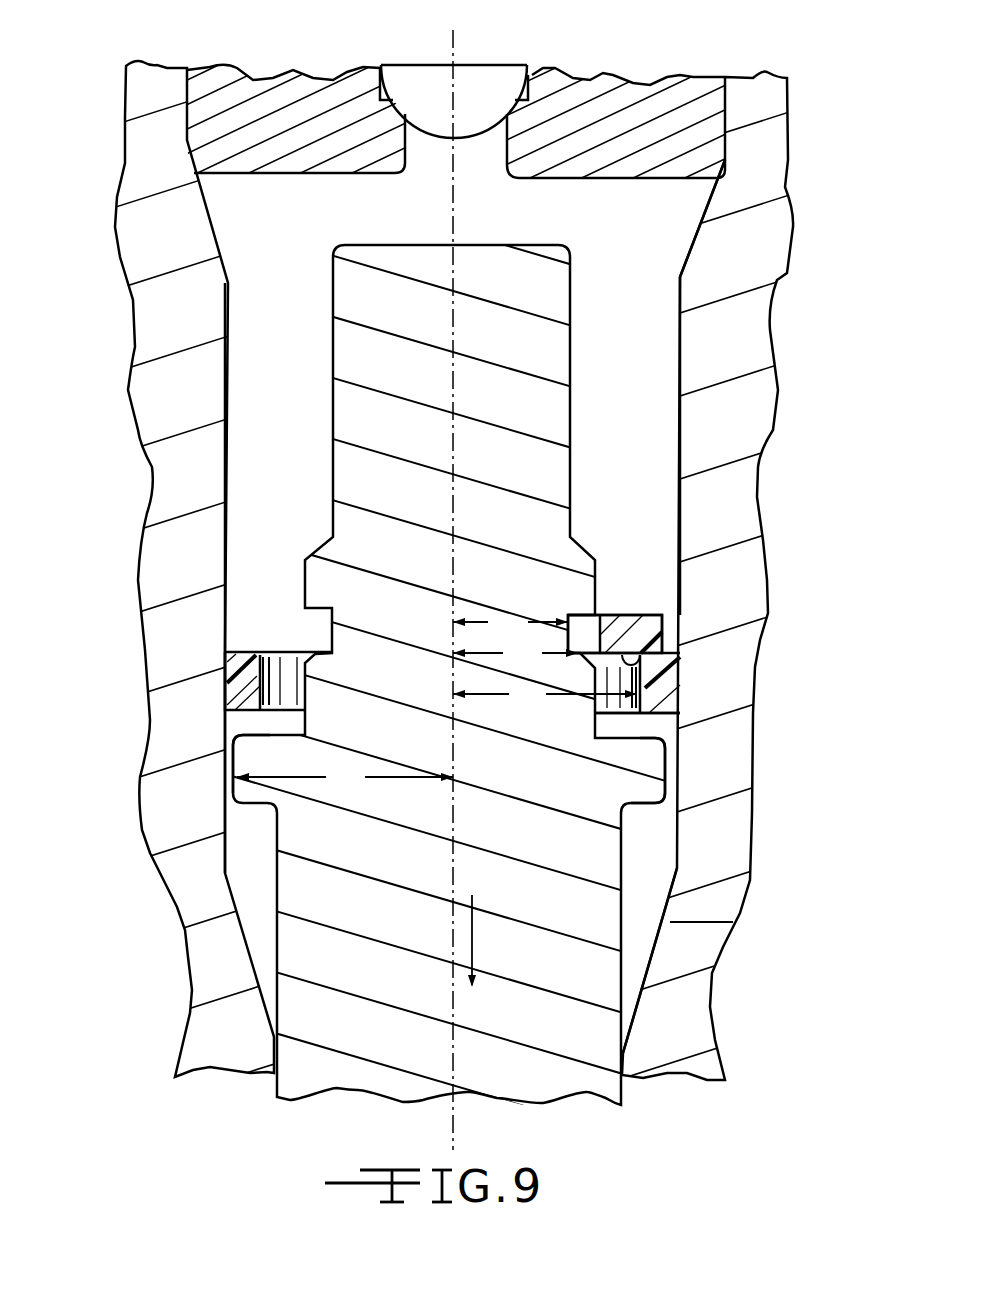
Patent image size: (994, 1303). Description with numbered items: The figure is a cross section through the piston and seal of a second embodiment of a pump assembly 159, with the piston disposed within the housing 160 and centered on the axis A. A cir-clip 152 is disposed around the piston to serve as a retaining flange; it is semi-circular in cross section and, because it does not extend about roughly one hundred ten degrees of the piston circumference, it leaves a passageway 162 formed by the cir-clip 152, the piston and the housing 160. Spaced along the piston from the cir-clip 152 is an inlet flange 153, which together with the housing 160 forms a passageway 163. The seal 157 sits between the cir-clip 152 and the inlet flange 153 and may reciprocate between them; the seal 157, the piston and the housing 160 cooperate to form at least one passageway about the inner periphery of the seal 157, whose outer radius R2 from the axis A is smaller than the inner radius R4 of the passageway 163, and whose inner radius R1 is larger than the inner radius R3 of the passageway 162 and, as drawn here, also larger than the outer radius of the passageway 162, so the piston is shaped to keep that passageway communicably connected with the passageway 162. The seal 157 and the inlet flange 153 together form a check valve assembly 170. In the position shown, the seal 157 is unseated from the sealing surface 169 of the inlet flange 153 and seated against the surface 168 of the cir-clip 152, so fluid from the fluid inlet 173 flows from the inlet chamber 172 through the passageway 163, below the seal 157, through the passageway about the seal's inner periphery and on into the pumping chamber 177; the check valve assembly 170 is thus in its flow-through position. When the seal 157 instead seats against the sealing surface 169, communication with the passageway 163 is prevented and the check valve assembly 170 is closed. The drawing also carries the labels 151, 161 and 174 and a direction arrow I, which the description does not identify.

The axis A is at (456, 54).
The piston rod 151 is at (633, 877).
The cir-clip 152 is at (655, 620).
The inlet flange 153 is at (665, 770).
The seal 157 is at (683, 688).
The pump assembly 159 is at (697, 60).
The housing 160 is at (220, 944).
The housing wall 161 is at (680, 255).
The passageway 162 is at (226, 606).
The passageway 163 is at (232, 755).
The surface 168 is at (672, 662).
The sealing surface 169 is at (615, 735).
The check valve assembly 170 is at (705, 737).
The inlet chamber 172 is at (260, 850).
The fluid inlet 173 is at (707, 870).
The ball 174 is at (415, 62).
The pumping chamber 177 is at (287, 240).
The inner radius R1 is at (515, 661).
The outer radius R2 is at (545, 704).
The inner radius R3 is at (510, 631).
The inner radius R4 is at (345, 785).
The direction I is at (472, 922).